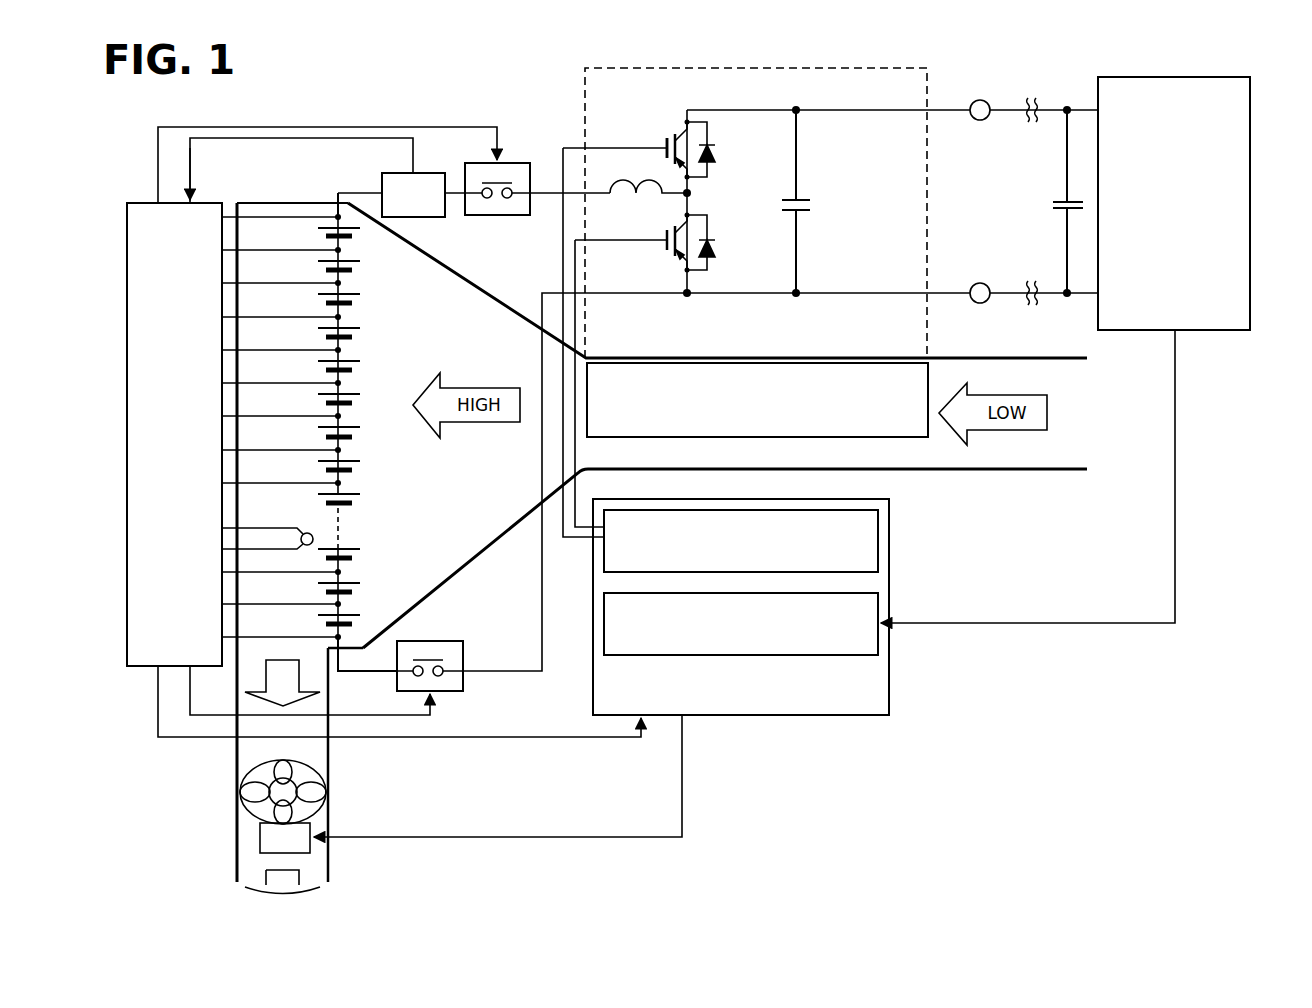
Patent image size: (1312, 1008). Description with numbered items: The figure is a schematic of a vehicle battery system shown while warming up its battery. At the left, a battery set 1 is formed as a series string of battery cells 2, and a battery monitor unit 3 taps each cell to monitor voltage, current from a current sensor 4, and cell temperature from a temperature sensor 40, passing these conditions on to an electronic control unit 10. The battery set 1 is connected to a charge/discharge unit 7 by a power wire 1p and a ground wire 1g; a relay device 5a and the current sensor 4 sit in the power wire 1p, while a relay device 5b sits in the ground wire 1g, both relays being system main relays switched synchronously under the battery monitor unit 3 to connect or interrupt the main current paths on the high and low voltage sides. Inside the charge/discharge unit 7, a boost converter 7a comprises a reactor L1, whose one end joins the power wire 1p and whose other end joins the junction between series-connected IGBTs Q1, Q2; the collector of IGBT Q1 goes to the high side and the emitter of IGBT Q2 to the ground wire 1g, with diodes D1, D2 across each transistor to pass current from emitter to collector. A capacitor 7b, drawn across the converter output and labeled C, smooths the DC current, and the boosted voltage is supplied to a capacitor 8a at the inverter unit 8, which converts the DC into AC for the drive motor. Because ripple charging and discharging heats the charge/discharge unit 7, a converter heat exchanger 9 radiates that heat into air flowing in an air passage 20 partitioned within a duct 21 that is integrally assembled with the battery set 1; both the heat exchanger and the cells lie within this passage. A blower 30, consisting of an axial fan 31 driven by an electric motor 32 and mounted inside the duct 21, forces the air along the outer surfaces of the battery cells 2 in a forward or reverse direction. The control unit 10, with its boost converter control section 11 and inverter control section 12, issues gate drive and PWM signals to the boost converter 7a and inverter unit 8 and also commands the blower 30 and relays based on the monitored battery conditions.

The battery set 1 is at (321, 411).
The battery cell 2 is at (360, 270).
The battery monitor unit 3 is at (127, 318).
The current sensor 4 is at (380, 177).
The relay device 5a is at (517, 163).
The relay device 5b is at (452, 691).
The power wire 1p is at (549, 188).
The ground wire 1g is at (523, 672).
The charge/discharge unit 7 is at (841, 197).
The boost converter 7a is at (669, 117).
The capacitor 7b is at (815, 189).
The inverter unit 8 is at (1250, 178).
The capacitor 8a is at (1055, 202).
The converter heat exchanger 9 is at (905, 456).
The control unit 10 is at (631, 668).
The boost converter control section 11 is at (878, 540).
The inverter control section 12 is at (878, 645).
The air passage 20 is at (843, 450).
The duct 21 is at (468, 566).
The blower 30 is at (241, 807).
The axial fan 31 is at (252, 782).
The electric motor 32 is at (260, 838).
The temperature sensor 40 is at (304, 533).
The insulated-gate bipolar transistor Q1 is at (664, 159).
The insulated-gate bipolar transistor Q2 is at (664, 251).
The diode D1 is at (712, 153).
The diode D2 is at (712, 247).
The reactor L1 is at (619, 201).
The smoothing capacitor C is at (806, 217).